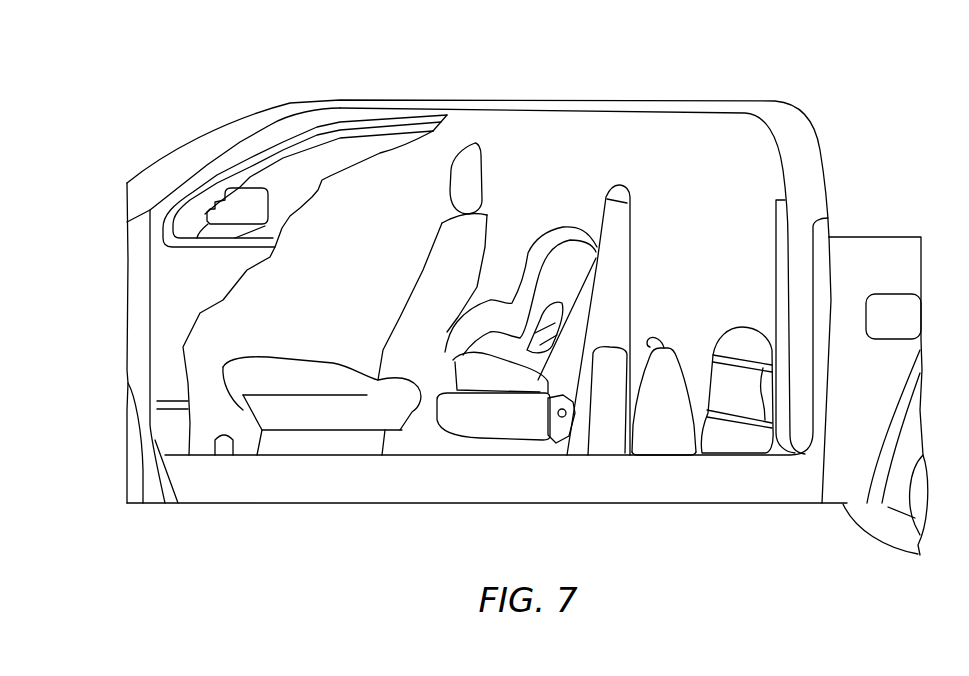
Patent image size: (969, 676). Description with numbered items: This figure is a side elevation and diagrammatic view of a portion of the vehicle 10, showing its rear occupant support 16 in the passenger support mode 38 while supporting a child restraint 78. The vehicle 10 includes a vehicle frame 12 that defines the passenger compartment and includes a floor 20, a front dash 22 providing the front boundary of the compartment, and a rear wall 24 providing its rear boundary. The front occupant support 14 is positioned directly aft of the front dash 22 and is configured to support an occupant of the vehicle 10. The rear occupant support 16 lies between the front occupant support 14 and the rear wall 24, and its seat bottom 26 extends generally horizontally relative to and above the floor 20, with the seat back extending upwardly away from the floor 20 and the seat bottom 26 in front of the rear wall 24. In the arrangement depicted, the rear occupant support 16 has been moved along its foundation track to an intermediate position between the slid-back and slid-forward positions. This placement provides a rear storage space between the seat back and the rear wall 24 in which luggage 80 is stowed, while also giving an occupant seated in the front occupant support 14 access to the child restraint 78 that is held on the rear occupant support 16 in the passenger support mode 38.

The vehicle 10 is at (84, 80).
The vehicle frame 12 is at (330, 97).
The front occupant support 14 is at (340, 283).
The rear occupant support 16 is at (580, 182).
The floor 20 is at (215, 455).
The front dash 22 is at (218, 295).
The rear wall 24 is at (803, 220).
The seat bottom 26 is at (465, 432).
The passenger support mode 38 is at (522, 138).
The child restraint 78 is at (513, 215).
The luggage 80 is at (671, 312).